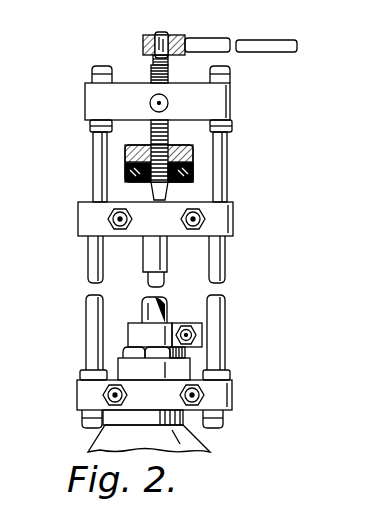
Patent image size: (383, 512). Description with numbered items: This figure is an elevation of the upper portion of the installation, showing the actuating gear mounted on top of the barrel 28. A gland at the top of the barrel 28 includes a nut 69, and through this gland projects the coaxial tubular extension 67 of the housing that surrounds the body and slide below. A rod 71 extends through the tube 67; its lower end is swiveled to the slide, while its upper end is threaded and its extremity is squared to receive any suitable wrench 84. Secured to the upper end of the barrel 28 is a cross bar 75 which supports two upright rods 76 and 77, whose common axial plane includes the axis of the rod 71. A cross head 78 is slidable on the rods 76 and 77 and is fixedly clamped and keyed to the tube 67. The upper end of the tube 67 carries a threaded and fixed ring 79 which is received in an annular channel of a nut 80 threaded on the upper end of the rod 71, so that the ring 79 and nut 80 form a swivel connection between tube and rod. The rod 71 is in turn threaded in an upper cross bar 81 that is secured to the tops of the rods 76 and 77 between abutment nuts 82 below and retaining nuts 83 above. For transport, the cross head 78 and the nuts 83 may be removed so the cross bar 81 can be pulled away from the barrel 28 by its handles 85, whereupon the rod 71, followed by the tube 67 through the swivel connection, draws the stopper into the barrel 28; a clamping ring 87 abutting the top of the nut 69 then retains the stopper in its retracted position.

The barrel 28 is at (207, 445).
The tubular extension 67 is at (158, 253).
The nut 69 is at (183, 355).
The rod 71 is at (168, 72).
The cross bar 75 is at (208, 405).
The upright rod 76 is at (88, 258).
The upright rod 77 is at (226, 262).
The cross head 78 is at (78, 217).
The ring 79 is at (193, 167).
The nut 80 is at (125, 155).
The cross bar 81 is at (212, 108).
The abutment nuts 82 is at (85, 124).
The retaining nuts 83 is at (85, 80).
The wrench 84 is at (261, 56).
The handles 85 is at (150, 103).
The clamping ring 87 is at (128, 335).